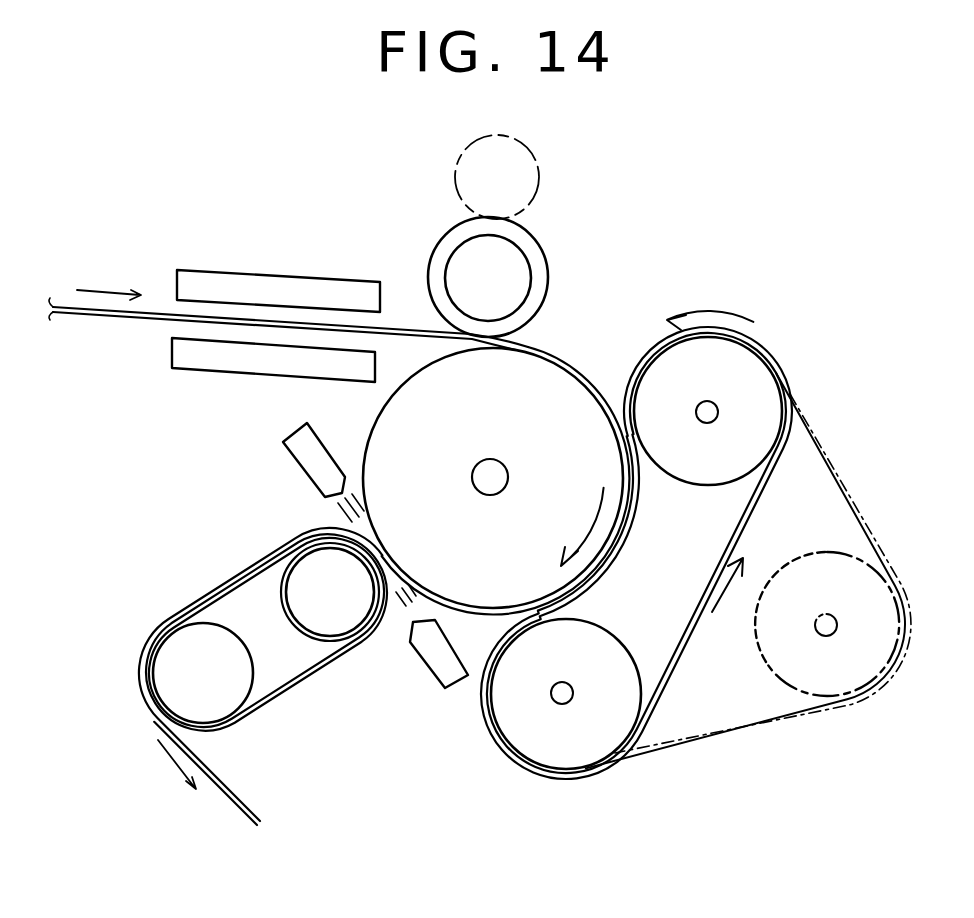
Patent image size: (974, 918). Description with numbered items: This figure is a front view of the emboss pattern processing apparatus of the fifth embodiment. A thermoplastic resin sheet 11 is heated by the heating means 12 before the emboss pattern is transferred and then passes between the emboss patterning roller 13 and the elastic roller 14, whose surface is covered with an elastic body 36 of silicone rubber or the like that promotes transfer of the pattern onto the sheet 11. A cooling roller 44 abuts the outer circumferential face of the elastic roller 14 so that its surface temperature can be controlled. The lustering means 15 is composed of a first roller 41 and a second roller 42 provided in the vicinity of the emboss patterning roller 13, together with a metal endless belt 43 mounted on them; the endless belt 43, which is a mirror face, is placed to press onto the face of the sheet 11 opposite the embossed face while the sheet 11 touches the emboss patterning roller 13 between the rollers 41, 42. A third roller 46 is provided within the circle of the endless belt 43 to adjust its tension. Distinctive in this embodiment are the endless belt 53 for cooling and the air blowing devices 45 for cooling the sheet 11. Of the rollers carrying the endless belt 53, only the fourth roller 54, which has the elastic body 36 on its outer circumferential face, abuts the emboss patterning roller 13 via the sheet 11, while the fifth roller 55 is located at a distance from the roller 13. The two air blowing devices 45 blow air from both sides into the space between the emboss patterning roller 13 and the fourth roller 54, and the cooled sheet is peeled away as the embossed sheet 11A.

The thermoplastic resin sheet 11 is at (85, 318).
The embossed sheet 11A is at (228, 803).
The heating means 12 is at (275, 283).
The emboss patterning roller 13 is at (547, 397).
The elastic roller 14 is at (512, 278).
The lustering means 15 is at (562, 770).
The elastic body 36 is at (447, 247).
The first roller 41 is at (683, 455).
The second roller 42 is at (593, 650).
The endless belt 43 is at (833, 470).
The cooling roller 44 is at (540, 160).
The air blowing device 45 is at (310, 462).
The third roller 46 is at (785, 688).
The endless belt 53 is at (303, 680).
The fourth roller 54 is at (333, 602).
The fifth roller 55 is at (217, 688).